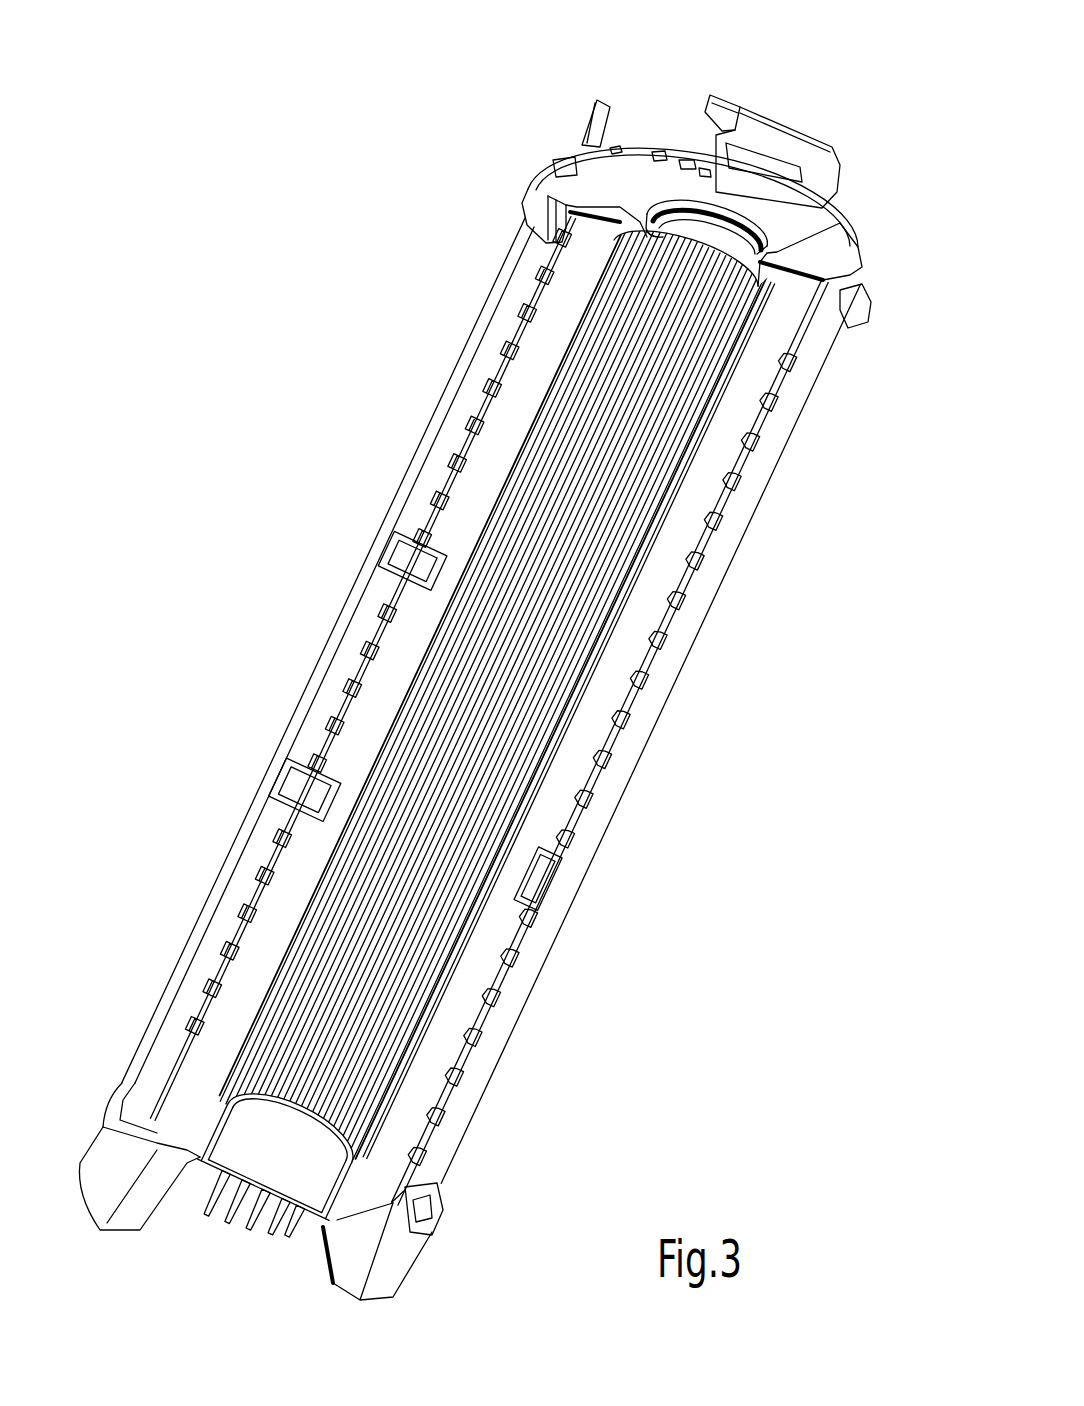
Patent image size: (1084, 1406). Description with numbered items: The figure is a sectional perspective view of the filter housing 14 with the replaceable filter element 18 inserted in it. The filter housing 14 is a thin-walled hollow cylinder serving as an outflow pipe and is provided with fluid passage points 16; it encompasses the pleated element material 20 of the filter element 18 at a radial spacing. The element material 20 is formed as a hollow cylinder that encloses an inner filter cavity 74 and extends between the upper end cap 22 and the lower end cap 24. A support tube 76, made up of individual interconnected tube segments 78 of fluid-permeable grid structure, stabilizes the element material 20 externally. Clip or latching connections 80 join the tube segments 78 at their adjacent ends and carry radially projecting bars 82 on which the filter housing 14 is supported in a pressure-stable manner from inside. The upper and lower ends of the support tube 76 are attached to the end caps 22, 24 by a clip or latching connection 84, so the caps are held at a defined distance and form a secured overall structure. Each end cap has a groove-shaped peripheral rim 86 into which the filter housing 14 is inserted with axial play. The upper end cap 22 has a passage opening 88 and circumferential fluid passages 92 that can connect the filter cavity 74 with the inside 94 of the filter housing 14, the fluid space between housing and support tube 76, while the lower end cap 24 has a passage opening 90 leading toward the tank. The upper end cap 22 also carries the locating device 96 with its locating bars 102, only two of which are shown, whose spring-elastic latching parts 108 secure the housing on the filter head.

The filter housing 14 is at (378, 548).
The fluid passage points 16 is at (323, 653).
The filter element 18 is at (542, 803).
The element material 20 is at (494, 685).
The upper end cap 22 is at (807, 252).
The lower end cap 24 is at (437, 1180).
The filter cavity 74 is at (457, 893).
The support tube 76 is at (698, 560).
The tube segments 78 is at (738, 482).
The clip or latching connections 80 is at (558, 880).
The radially projecting bars 82 is at (398, 538).
The clip or latching connection 84 is at (553, 226).
The groove-shaped peripheral rim 86 is at (865, 306).
The passage opening 88 is at (687, 230).
The passage opening 90 is at (300, 1200).
The fluid passages 92 is at (682, 150).
The inside of the filter housing 94 is at (498, 342).
The locating device 96 is at (837, 196).
The locating bars 102 is at (600, 130).
The latching parts 108 is at (718, 110).